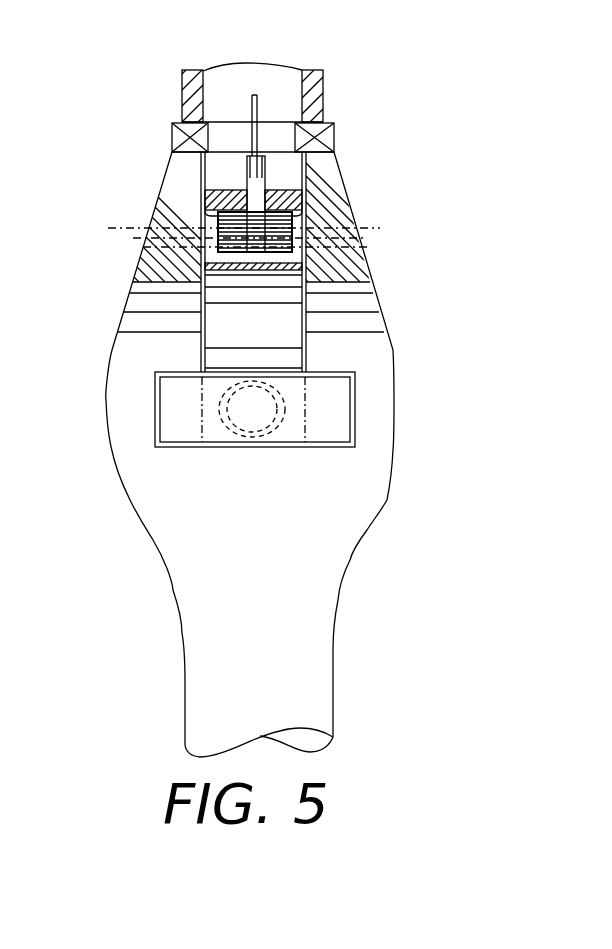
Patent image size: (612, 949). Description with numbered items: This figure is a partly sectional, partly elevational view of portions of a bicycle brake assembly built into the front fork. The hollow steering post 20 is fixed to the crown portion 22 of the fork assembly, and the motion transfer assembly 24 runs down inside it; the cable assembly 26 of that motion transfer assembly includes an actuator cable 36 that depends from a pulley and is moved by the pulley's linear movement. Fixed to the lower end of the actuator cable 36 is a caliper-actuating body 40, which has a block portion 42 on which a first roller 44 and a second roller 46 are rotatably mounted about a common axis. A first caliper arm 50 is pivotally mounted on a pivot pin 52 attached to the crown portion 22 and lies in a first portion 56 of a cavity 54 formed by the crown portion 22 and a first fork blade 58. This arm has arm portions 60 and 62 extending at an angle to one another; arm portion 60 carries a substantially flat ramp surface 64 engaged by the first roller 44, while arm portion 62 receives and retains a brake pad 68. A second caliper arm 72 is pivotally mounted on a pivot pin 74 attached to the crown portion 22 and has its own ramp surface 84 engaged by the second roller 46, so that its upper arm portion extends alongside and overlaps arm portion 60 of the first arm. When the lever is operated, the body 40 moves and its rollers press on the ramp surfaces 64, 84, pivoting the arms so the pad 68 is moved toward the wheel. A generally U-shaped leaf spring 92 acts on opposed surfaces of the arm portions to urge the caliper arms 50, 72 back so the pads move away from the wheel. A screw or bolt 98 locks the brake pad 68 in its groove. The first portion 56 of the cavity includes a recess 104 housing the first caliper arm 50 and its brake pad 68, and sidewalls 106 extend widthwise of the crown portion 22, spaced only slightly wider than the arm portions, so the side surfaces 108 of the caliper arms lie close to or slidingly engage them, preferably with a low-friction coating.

The steering post 20 is at (324, 88).
The crown portion 22 is at (340, 165).
The motion transfer assembly 24 is at (252, 99).
The cable assembly 26 is at (257, 100).
The actuator cable 36 is at (267, 112).
The caliper-actuating body 40 is at (247, 167).
The block portion 42 is at (172, 131).
The first roller 44 is at (218, 228).
The second roller 46 is at (292, 229).
The first caliper arm 50 is at (200, 253).
The pivot pin 52 is at (229, 232).
The cavity 54 is at (276, 162).
The first portion of cavity 56 is at (200, 324).
The first fork blade 58 is at (107, 393).
The arm portion 60 is at (212, 170).
The arm portion 62 is at (200, 257).
The ramp surface 64 is at (205, 210).
The brake pad 68 is at (337, 408).
The second caliper arm 72 is at (297, 198).
The pivot pin 74 is at (335, 254).
The ramp surface 84 is at (299, 225).
The leaf spring 92 is at (287, 281).
The screw or bolt 98 is at (253, 443).
The recess 104 is at (168, 432).
The sidewalls 106 is at (273, 325).
The side surfaces 108 is at (300, 355).